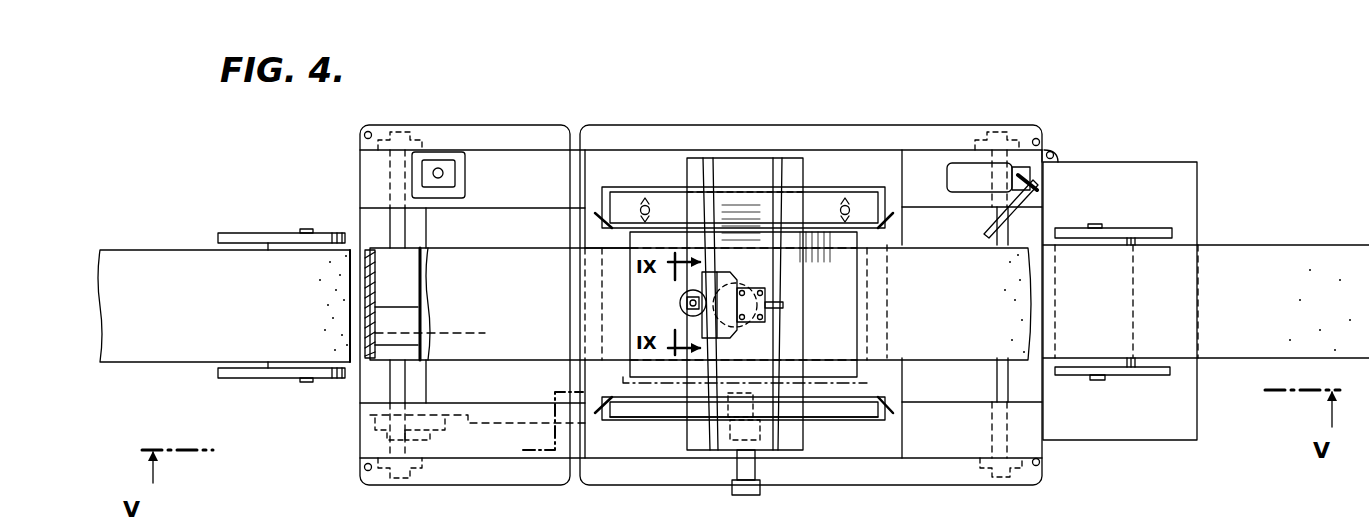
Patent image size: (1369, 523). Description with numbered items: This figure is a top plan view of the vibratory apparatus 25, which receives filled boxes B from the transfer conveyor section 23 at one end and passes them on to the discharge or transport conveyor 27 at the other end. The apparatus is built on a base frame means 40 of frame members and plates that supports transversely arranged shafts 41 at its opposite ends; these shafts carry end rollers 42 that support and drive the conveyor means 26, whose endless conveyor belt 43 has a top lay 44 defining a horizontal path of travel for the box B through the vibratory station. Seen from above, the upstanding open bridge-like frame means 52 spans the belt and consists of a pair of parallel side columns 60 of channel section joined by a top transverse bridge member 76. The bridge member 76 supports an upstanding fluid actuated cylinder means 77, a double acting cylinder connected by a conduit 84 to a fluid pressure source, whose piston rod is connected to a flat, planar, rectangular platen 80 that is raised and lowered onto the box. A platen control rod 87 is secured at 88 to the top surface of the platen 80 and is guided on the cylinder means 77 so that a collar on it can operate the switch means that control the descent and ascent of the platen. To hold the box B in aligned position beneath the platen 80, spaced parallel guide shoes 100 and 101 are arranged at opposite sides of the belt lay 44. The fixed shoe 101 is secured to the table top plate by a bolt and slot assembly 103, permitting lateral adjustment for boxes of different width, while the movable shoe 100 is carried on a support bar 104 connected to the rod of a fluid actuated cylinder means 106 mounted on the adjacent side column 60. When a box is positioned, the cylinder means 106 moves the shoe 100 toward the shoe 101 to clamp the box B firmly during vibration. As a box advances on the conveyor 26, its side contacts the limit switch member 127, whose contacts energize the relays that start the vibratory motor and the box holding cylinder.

The transfer conveyor section 23 is at (1206, 301).
The vibratory apparatus 25 is at (1101, 133).
The conveyor means 26 is at (528, 246).
The discharge or transport conveyor 27 is at (224, 305).
The base frame means 40 is at (953, 114).
The transversely arranged shafts 41 is at (393, 222).
The end rollers 42 is at (390, 350).
The endless conveyor belt 43 is at (418, 262).
The top lay 44 is at (698, 304).
The upstanding open bridge-like frame means 52 is at (727, 158).
The side columns 60 is at (793, 170).
The top transverse bridge member 76 is at (743, 351).
The fluid actuated cylinder means 77 is at (757, 272).
The platen 80 is at (840, 272).
The conduit 84 is at (783, 305).
The platen control rod 87 is at (690, 305).
The securing point of control rod 88 is at (690, 296).
The movable guide shoe 100 is at (853, 405).
The fixed guide shoe 101 is at (664, 196).
The bolt and slot assembly 103 is at (795, 210).
The support bar 104 is at (813, 407).
The fluid actuated cylinder means 106 is at (740, 467).
The limit switch member 127 is at (1005, 226).
The box B is at (880, 340).